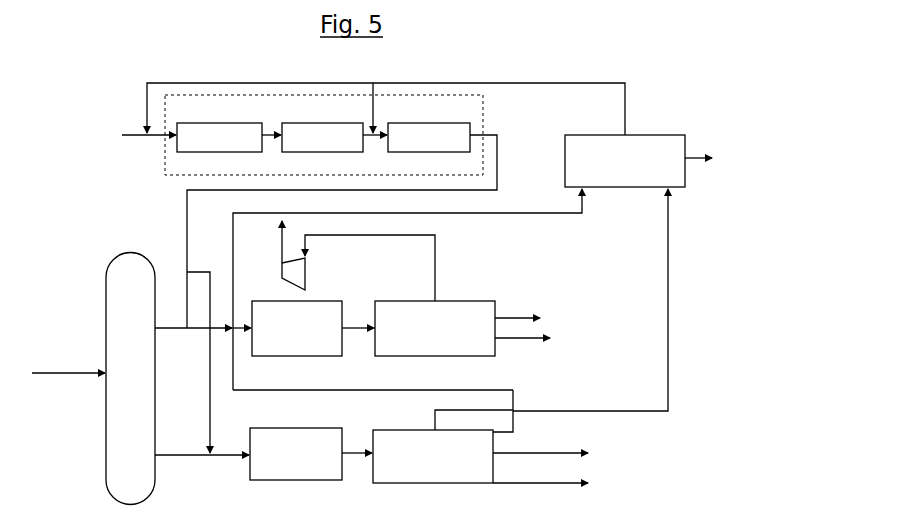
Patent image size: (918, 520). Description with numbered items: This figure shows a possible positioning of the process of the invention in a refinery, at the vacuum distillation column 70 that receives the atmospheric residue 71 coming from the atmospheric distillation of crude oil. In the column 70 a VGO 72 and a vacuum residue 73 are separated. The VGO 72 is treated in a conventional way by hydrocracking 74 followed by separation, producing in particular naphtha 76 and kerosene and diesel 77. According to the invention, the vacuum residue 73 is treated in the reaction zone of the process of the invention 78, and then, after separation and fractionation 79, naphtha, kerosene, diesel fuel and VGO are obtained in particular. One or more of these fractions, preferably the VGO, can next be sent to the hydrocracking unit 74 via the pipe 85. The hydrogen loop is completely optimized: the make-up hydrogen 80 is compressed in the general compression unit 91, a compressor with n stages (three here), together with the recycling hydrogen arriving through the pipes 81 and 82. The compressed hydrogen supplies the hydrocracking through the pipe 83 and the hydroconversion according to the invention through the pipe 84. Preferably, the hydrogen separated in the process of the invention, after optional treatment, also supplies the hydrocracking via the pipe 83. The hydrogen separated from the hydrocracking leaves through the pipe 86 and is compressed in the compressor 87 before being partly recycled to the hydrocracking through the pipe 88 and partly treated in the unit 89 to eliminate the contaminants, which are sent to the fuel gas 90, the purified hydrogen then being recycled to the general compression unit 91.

The vacuum distillation column 70 is at (127, 252).
The atmospheric residue 71 is at (72, 376).
The VGO 72 is at (160, 327).
The vacuum residue 73 is at (165, 455).
The hydrocracking 74 is at (320, 300).
The naphtha 76 is at (458, 300).
The kerosene and diesel 77 is at (520, 342).
The reaction zone of the process of the invention 78 is at (286, 428).
The separation and fractionation 79 is at (400, 430).
The make-up hydrogen 80 is at (142, 137).
The recycling hydrogen pipe 81 is at (145, 100).
The recycling hydrogen pipe 82 is at (375, 100).
The hydrogen pipe to hydrocracking 83 is at (187, 240).
The hydrogen pipe to hydroconversion 84 is at (196, 271).
The pipe 85 is at (344, 389).
The hydrocracking hydrogen pipe 86 is at (437, 262).
The compressor 87 is at (308, 270).
The hydrogen recycle pipe 88 is at (267, 215).
The treatment unit 89 is at (645, 134).
The fuel gas 90 is at (692, 156).
The general compression unit 91 is at (476, 117).